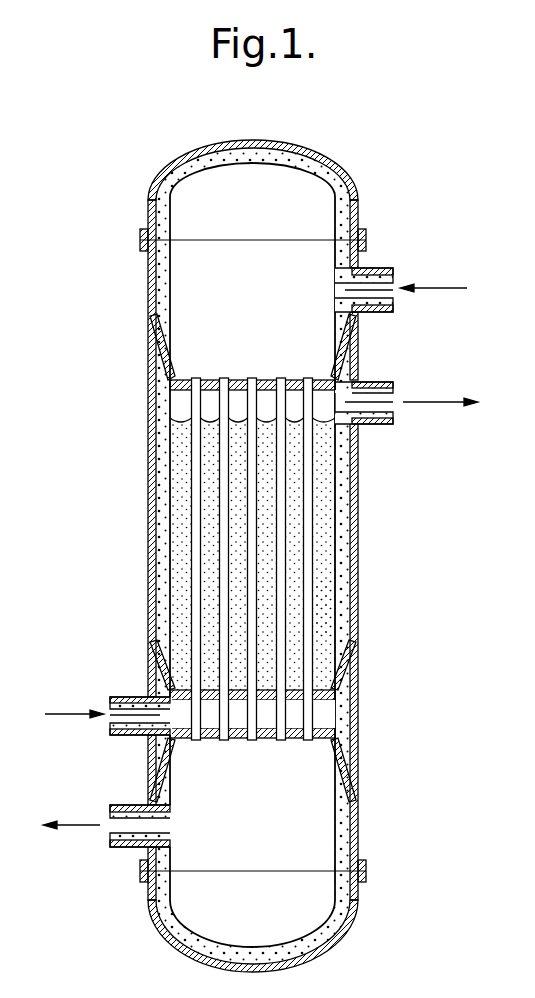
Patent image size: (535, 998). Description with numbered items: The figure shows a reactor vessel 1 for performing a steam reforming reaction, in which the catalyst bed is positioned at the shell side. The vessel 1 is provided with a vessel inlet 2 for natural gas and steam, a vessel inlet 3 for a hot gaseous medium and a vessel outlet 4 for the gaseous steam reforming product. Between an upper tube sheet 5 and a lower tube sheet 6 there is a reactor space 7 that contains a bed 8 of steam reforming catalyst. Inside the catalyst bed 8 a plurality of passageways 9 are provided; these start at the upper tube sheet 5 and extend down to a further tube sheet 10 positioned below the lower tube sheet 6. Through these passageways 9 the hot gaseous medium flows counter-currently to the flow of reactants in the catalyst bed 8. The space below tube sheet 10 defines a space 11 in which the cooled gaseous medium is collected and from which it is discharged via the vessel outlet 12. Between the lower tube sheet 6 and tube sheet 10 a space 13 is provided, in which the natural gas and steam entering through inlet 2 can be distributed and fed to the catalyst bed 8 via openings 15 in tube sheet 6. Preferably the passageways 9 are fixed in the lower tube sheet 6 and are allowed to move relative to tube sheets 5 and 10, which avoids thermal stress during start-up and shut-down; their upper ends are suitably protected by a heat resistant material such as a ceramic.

The reactor vessel 1 is at (150, 525).
The vessel inlet 2 is at (120, 737).
The vessel inlet 3 is at (377, 268).
The vessel outlet 4 is at (377, 380).
The upper tube sheet 5 is at (210, 380).
The lower tube sheet 6 is at (355, 680).
The reactor space 7 is at (324, 624).
The bed of steam reforming catalyst 8 is at (327, 573).
The passageways 9 is at (310, 530).
The tube sheet 10 is at (293, 738).
The space 11 is at (310, 848).
The vessel outlet 12 is at (118, 850).
The space 13 is at (327, 716).
The openings 15 is at (180, 687).